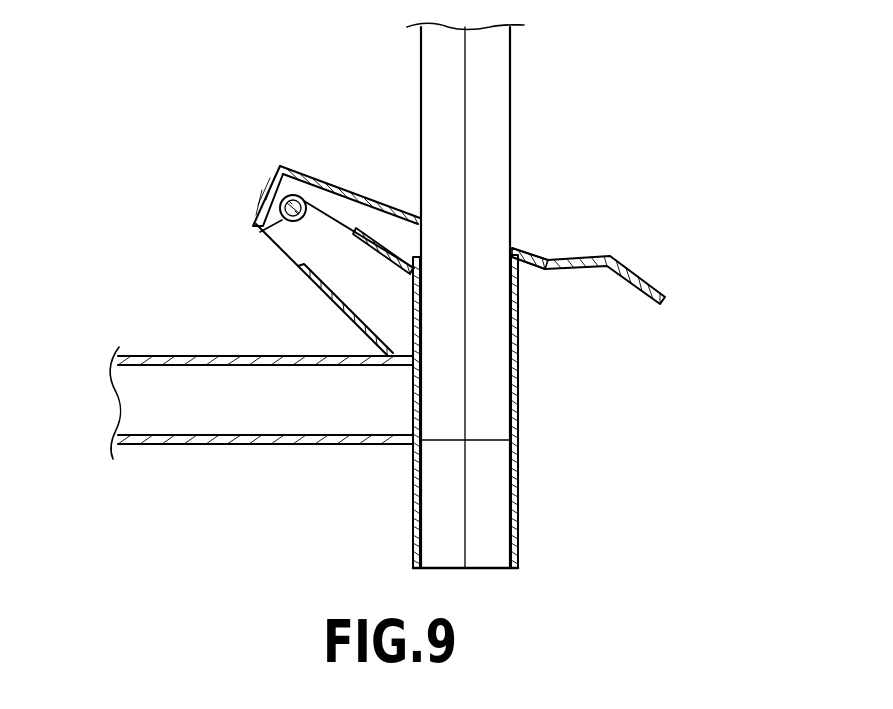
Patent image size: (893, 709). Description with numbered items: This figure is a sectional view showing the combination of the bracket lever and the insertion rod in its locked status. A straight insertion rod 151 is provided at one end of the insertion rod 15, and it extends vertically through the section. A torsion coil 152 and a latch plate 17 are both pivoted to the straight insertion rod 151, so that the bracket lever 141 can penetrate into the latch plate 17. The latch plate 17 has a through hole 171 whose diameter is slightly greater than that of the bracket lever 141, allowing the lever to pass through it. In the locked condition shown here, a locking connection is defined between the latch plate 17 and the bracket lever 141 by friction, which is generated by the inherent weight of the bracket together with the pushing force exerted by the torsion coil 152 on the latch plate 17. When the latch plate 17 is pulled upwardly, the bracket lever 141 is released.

The bracket lever 141 is at (507, 86).
The straight insertion rod 151 is at (520, 482).
The insertion rod 15 is at (192, 355).
The torsion coil 152 is at (331, 190).
The latch plate 17 is at (633, 267).
The through hole 171 is at (513, 247).